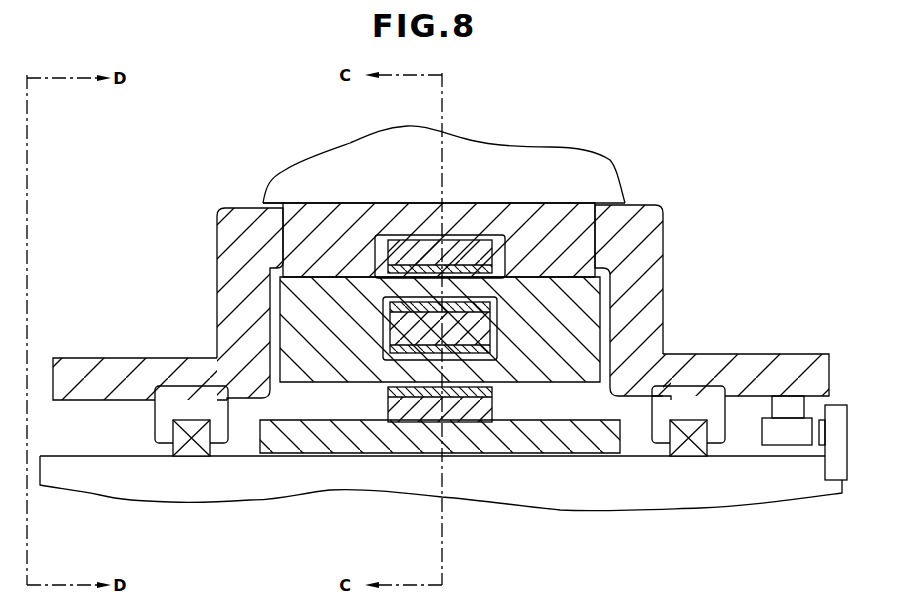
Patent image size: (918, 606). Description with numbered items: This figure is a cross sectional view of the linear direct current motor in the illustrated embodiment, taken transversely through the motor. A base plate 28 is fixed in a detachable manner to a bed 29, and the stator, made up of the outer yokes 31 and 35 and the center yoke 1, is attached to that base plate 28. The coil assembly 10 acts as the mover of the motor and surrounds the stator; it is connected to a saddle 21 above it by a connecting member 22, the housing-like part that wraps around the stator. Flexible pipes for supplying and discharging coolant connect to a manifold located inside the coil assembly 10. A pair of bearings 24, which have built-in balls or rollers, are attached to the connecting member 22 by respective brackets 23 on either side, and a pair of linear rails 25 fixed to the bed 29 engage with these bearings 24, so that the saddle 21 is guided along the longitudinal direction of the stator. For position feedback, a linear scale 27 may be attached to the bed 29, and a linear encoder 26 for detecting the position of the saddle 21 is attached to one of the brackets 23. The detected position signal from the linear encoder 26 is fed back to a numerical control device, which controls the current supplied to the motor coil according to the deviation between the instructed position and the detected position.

The center yoke 1 is at (477, 335).
The coil assembly 10 is at (590, 300).
The saddle 21 is at (612, 176).
The connecting member 22 is at (300, 203).
The bracket 23 is at (103, 358).
The bearing 24 is at (188, 395).
The linear rail 25 is at (190, 458).
The linear encoder 26 is at (790, 446).
The linear scale 27 is at (847, 455).
The base plate 28 is at (493, 447).
The bed 29 is at (283, 498).
The outer yoke 31 is at (410, 422).
The outer yoke 35 is at (472, 253).